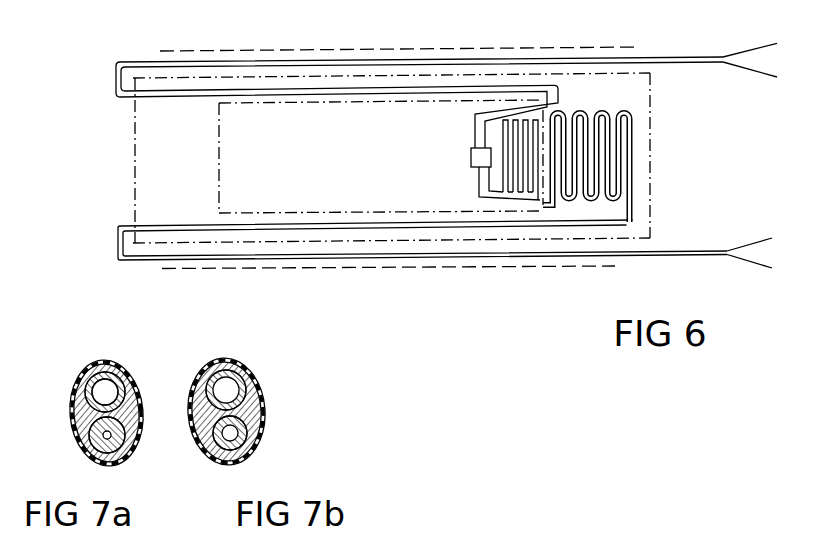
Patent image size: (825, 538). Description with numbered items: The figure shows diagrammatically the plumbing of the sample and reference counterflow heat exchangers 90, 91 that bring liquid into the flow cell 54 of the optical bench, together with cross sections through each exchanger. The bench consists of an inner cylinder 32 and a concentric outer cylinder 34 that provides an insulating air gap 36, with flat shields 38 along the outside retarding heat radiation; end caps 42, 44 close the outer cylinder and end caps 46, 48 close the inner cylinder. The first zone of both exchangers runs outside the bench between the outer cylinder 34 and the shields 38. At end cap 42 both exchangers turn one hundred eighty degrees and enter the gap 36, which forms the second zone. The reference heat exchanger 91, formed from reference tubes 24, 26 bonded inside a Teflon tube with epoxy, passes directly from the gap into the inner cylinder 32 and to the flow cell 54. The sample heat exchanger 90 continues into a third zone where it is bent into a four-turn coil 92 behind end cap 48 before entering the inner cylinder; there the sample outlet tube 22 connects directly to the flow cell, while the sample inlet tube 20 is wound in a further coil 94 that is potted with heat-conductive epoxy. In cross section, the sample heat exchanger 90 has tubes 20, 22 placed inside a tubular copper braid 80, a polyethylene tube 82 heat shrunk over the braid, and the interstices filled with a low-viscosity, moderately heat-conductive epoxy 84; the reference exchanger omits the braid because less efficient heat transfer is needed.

In FIG. 6, the sample inlet tube 20 is at (753, 263).
In FIG. 7a, the sample inlet tube 20 is at (84, 436).
In FIG. 6, the sample outlet tube 22 is at (752, 241).
In FIG. 7a, the sample outlet tube 22 is at (82, 385).
In FIG. 6, the reference inlet tube 24 is at (757, 78).
In FIG. 7b, the reference inlet tube 24 is at (253, 437).
In FIG. 6, the reference outlet tube 26 is at (758, 47).
In FIG. 7b, the reference outlet tube 26 is at (253, 383).
In FIG. 6, the inner cylinder 32 is at (322, 208).
In FIG. 6, the outer cylinder 34 is at (157, 245).
In FIG. 6, the air gap 36 is at (363, 80).
In FIG. 6, the flat shields 38 is at (290, 48).
In FIG. 6, the end cap 42 is at (134, 140).
In FIG. 6, the end cap 44 is at (653, 113).
In FIG. 6, the end cap 46 is at (218, 146).
In FIG. 6, the end cap 48 is at (546, 125).
In FIG. 6, the flow cell 54 is at (469, 150).
In FIG. 7a, the tubular copper braid 80 is at (107, 362).
In FIG. 7a, the polyethylene tube 82 is at (73, 400).
In FIG. 7b, the polyethylene tube 82 is at (262, 410).
In FIG. 7a, the epoxy 84 is at (128, 410).
In FIG. 7b, the epoxy 84 is at (167, 426).
In FIG. 6, the sample heat exchanger 90 is at (452, 86).
In FIG. 7a, the sample heat exchanger 90 is at (83, 361).
In FIG. 6, the reference heat exchanger 91 is at (679, 250).
In FIG. 7b, the reference heat exchanger 91 is at (196, 369).
In FIG. 6, the coil 92 is at (637, 152).
In FIG. 6, the coil 94 is at (500, 181).